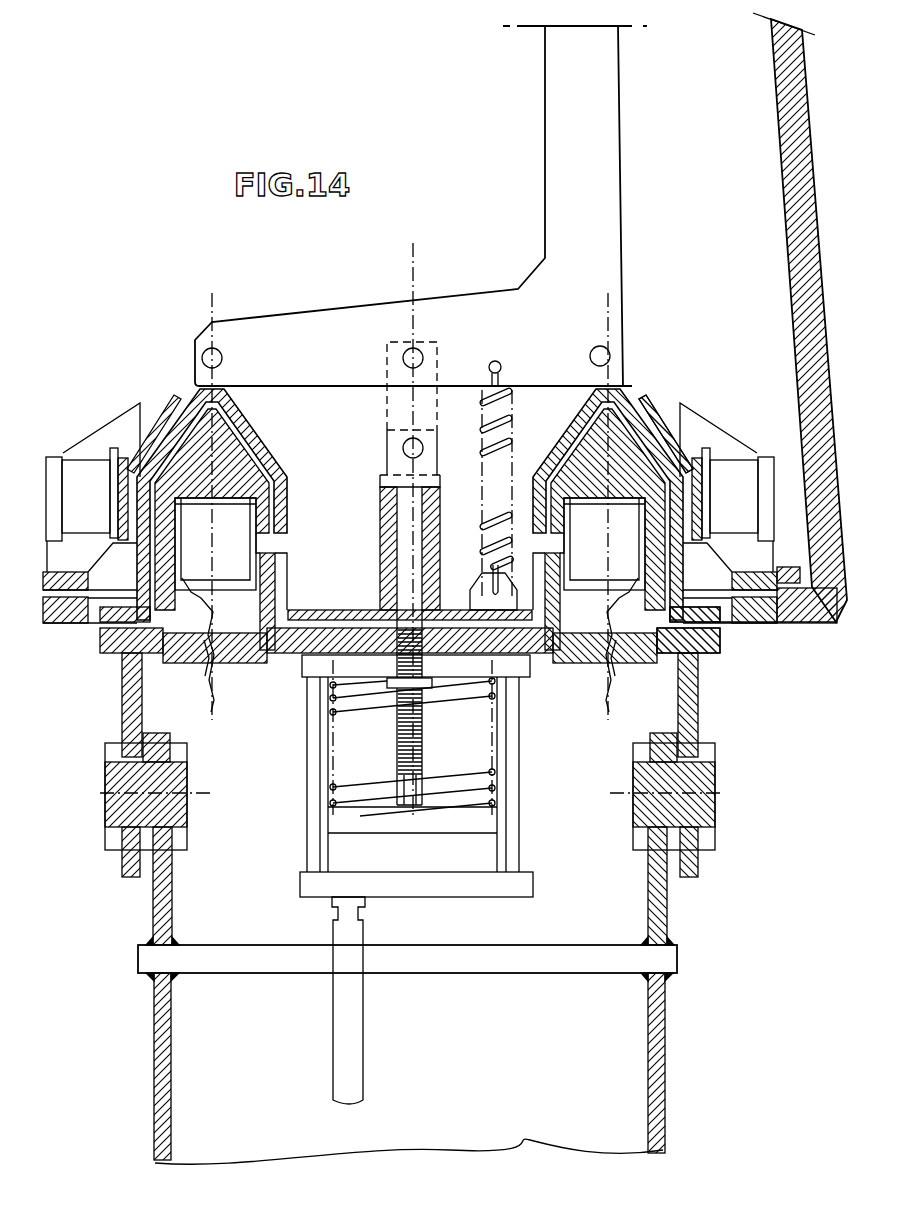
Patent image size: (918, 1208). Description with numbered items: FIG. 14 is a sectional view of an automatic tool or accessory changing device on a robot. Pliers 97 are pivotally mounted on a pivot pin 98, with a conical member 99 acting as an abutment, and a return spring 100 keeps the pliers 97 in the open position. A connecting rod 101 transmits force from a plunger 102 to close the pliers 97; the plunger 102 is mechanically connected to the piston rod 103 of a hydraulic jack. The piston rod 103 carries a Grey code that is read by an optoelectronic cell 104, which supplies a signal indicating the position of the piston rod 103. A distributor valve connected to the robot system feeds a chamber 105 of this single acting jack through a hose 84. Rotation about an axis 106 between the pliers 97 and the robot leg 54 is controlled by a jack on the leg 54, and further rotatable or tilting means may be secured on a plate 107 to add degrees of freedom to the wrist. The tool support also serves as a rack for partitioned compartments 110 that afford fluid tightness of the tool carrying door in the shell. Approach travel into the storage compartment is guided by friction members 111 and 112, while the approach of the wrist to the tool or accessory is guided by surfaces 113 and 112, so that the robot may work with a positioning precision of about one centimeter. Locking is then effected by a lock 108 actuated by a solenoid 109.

The robot leg 54 is at (603, 990).
The hose 84 is at (350, 1040).
The pliers 97 is at (602, 107).
The pivot pin 98 is at (203, 360).
The conical member 99 is at (620, 360).
The return spring 100 is at (500, 458).
The connecting rod 101 is at (400, 405).
The plunger 102 is at (405, 520).
The piston rod 103 is at (427, 743).
The optoelectronic cell 104 is at (427, 685).
The chamber 105 is at (463, 852).
The axis 106 is at (627, 787).
The plate 107 is at (603, 958).
The lock 108 is at (127, 497).
The solenoid 109 is at (92, 477).
The partitioned compartments 110 is at (795, 138).
The friction member 111 is at (662, 398).
The friction member 112 is at (642, 387).
The surface 113 is at (223, 440).